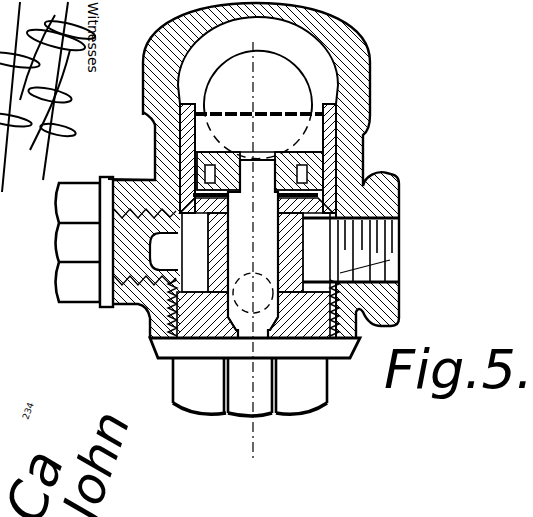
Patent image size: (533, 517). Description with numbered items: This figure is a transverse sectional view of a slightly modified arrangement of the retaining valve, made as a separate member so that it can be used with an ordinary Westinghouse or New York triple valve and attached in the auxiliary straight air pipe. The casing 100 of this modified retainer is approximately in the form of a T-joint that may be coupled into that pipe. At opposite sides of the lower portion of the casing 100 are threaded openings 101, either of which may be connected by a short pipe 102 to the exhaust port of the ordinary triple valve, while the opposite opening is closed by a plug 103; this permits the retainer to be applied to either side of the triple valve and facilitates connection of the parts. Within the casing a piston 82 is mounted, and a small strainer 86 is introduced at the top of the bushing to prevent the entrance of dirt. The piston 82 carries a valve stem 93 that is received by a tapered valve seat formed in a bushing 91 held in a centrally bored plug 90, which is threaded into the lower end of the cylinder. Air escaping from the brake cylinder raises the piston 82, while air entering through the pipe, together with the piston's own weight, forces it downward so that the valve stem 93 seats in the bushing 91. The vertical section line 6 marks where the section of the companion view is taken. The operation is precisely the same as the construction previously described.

The casing 100 is at (352, 62).
The threaded openings 101 is at (141, 184).
The short pipe 102 is at (366, 263).
The plug 103 is at (75, 284).
The plug 90 is at (152, 322).
The bushing 91 is at (285, 343).
The valve stem 93 is at (253, 249).
The piston 82 is at (232, 160).
The strainer 86 is at (237, 113).
The section line 6- 6 is at (254, 253).